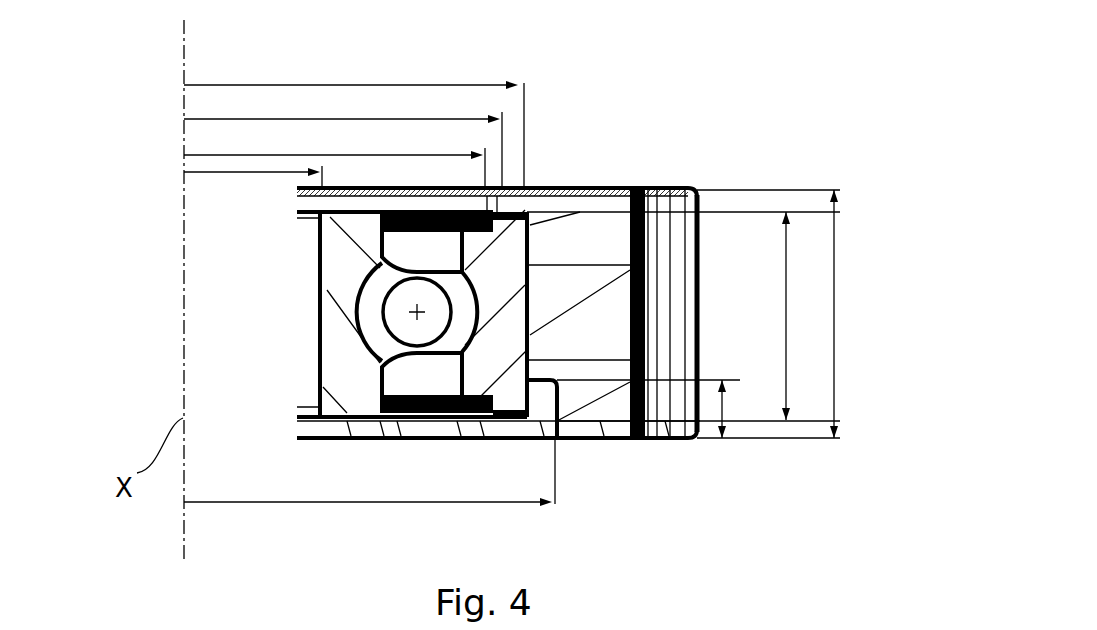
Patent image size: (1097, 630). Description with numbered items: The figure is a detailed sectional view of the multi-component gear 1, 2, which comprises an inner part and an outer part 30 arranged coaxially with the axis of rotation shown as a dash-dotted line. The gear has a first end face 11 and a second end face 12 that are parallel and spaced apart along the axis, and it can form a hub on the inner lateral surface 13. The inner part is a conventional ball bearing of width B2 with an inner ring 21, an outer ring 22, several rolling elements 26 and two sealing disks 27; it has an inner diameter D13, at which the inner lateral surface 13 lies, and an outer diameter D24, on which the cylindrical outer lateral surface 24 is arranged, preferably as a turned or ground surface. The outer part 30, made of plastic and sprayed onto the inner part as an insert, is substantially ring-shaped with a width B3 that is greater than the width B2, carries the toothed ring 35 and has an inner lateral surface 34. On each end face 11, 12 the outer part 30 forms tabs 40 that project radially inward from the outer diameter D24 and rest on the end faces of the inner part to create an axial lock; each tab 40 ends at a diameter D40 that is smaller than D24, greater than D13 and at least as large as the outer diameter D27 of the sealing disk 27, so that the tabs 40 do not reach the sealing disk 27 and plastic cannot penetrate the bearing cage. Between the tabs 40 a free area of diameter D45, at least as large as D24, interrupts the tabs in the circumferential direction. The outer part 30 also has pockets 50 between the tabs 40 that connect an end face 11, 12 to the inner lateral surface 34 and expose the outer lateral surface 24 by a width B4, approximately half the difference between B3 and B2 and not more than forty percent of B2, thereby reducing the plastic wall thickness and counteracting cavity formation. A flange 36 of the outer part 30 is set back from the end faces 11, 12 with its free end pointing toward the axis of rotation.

The multi-component gear 1 is at (753, 48).
The rotary device 2 is at (430, 297).
The first end face 11 is at (677, 182).
The second end face 12 is at (632, 442).
The inner lateral surface 13 is at (317, 302).
The inner ring 21 is at (350, 372).
The outer ring 22 is at (502, 350).
The outer lateral surface 24 is at (535, 350).
The rolling elements 26 is at (428, 355).
The sealing disks 27 is at (406, 400).
The outer part 30 is at (615, 111).
The inner lateral surface of the outer part 34 is at (515, 325).
The toothed ring 35 is at (672, 250).
The flange 36 is at (587, 188).
The tabs 40 is at (510, 232).
The pockets 50 is at (543, 412).
The width of the inner part B2 is at (786, 312).
The width of the outer part B3 is at (835, 262).
The pocket width B4 is at (727, 405).
The inner diameter of the inner part D13 is at (228, 175).
The outer diameter of the inner part D24 is at (343, 85).
The outer diameter of the sealing disk D27 is at (250, 155).
The tab diameter D40 is at (307, 119).
The diameter of the free area D45 is at (308, 505).